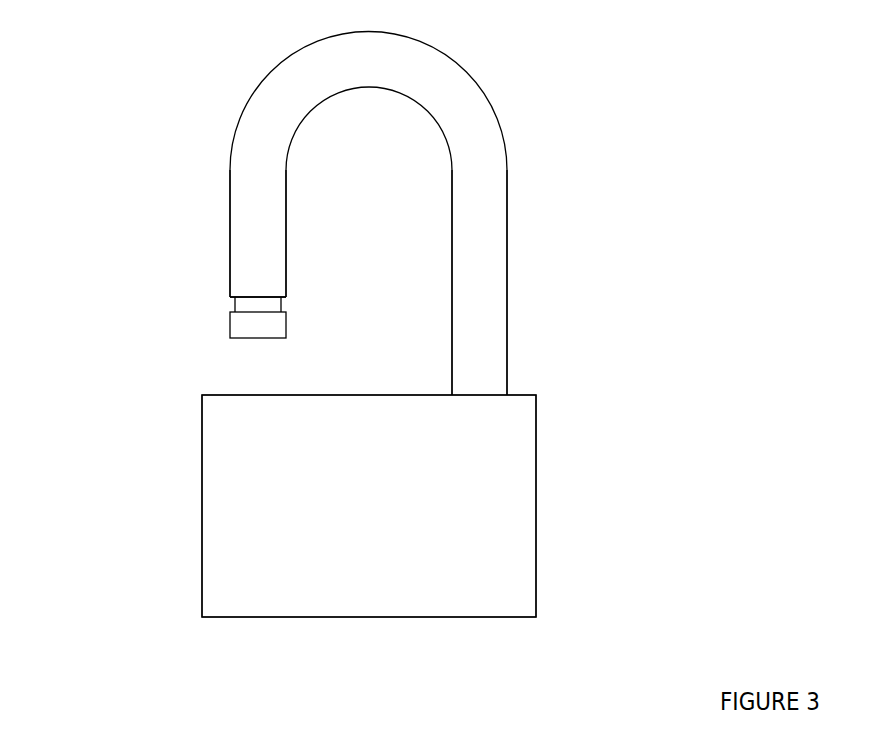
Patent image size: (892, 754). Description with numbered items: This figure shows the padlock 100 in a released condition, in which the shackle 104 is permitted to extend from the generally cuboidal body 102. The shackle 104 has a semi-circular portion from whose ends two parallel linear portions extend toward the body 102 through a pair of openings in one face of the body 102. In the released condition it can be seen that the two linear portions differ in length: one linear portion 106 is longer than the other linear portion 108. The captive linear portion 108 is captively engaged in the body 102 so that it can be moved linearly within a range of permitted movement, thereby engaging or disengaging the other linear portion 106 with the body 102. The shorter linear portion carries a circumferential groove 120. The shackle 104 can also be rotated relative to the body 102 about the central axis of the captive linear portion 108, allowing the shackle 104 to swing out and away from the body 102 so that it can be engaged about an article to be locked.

The padlock 100 is at (116, 524).
The body 102 is at (298, 612).
The shackle 104 is at (258, 140).
The linear portion of the shackle 106 is at (510, 285).
The captive linear portion of the shackle 108 is at (245, 217).
The circumferential groove 120 is at (243, 303).